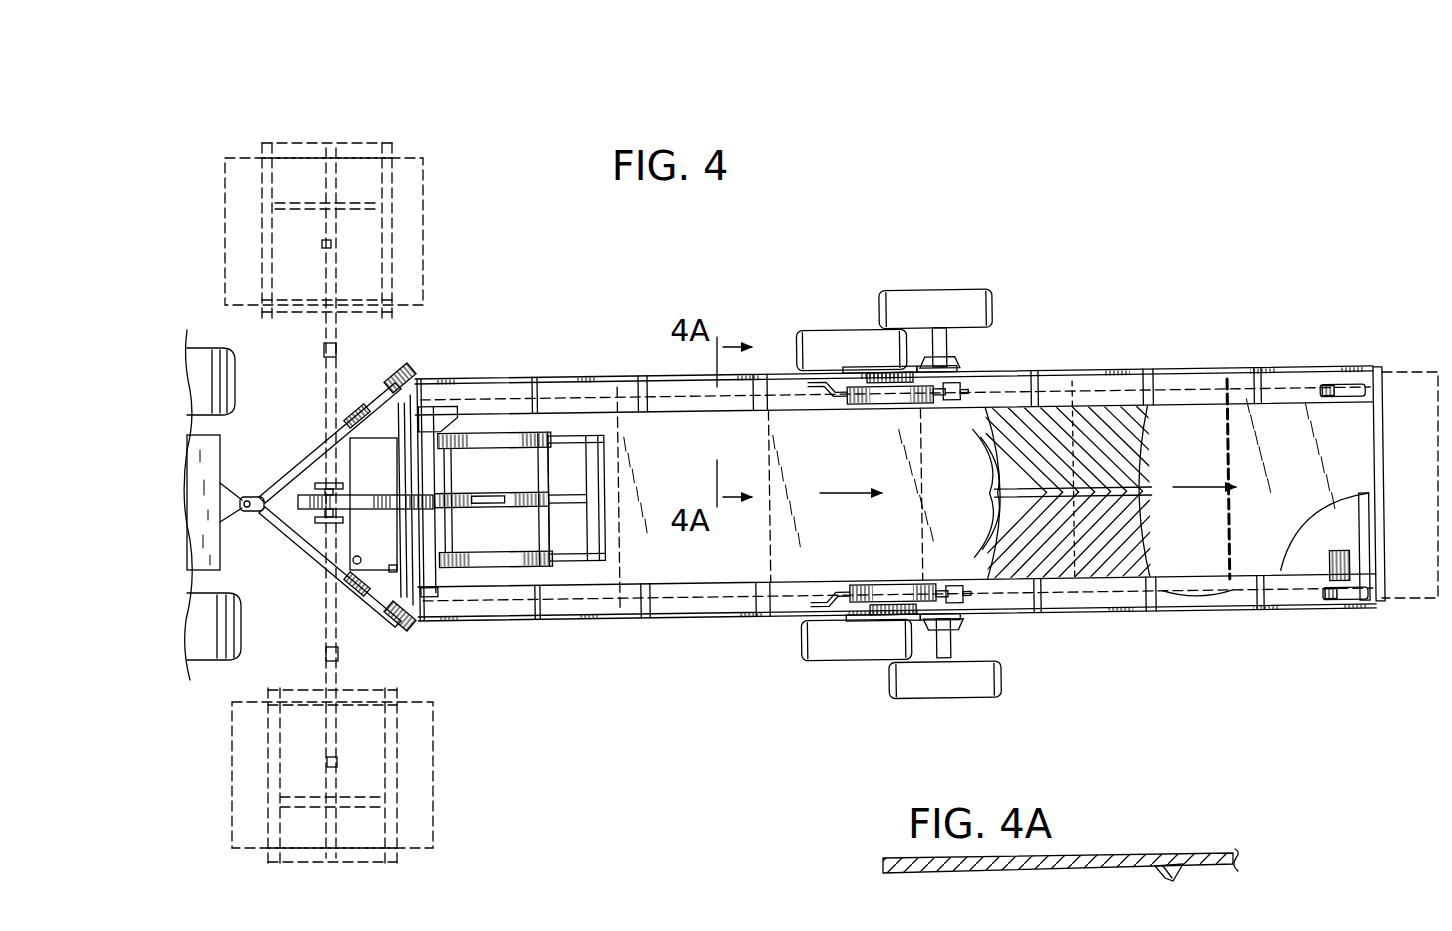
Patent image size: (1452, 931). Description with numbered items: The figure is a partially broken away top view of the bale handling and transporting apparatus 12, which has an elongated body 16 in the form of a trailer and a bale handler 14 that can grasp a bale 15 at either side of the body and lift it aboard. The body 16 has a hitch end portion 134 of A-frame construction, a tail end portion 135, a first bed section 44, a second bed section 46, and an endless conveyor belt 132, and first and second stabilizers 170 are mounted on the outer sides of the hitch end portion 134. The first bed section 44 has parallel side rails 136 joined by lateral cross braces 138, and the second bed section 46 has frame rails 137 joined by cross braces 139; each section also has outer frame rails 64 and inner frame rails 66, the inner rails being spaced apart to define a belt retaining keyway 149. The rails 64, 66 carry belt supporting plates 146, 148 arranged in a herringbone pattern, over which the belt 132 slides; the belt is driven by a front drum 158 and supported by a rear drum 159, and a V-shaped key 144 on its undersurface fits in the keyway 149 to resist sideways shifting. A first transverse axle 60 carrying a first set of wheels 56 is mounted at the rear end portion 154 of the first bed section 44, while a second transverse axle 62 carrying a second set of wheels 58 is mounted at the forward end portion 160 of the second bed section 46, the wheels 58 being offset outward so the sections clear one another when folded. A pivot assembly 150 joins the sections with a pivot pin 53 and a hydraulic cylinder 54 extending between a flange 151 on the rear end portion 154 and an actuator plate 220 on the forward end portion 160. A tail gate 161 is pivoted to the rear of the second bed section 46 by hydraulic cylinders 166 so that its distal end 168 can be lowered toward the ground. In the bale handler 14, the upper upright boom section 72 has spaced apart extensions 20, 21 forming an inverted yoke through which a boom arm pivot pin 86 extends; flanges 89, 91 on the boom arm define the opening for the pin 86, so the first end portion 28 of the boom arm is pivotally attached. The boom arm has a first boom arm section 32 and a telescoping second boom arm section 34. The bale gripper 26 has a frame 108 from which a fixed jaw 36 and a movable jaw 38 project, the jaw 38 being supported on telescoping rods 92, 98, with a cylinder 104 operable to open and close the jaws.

In FIG. 4, the bale handling and transporting apparatus 12 is at (627, 661).
In FIG. 4, the bale handler 14 is at (491, 420).
In FIG. 4, the bale 15 is at (426, 247).
In FIG. 4, the elongated body 16 is at (1078, 360).
In FIG. 4, the extension 20 is at (326, 600).
In FIG. 4, the extension 21 is at (302, 493).
In FIG. 4, the bale gripper 26 is at (350, 140).
In FIG. 4, the first end portion of boom arm 28 is at (296, 502).
In FIG. 4, the first boom arm section 32 is at (338, 380).
In FIG. 4, the second boom arm section 34 is at (338, 343).
In FIG. 4, the bale gripping jaw 36 is at (386, 322).
In FIG. 4, the bale gripping jaw 38 is at (372, 142).
In FIG. 4, the first bed section 44 is at (703, 624).
In FIG. 4, the second bed section 46 is at (1159, 623).
In FIG. 4, the pivot pin 53 is at (913, 372).
In FIG. 4, the hydraulic cylinder 54 is at (870, 407).
In FIG. 4, the first set of wheels 56 is at (812, 337).
In FIG. 4, the second set of wheels 58 is at (950, 291).
In FIG. 4, the first transverse axle 60 is at (853, 609).
In FIG. 4, the second transverse axle 62 is at (977, 322).
In FIG. 4, the outer longitudinally extending frame rail 64 is at (1047, 410).
In FIG. 4, the inner longitudinally extending frame rail 66 is at (995, 467).
In FIG. 4, the upper upright boom section 72 is at (317, 531).
In FIG. 4, the boom arm pivot pin 86 is at (326, 476).
In FIG. 4, the flange 89 is at (358, 511).
In FIG. 4, the flange 91 is at (364, 494).
In FIG. 4, the telescoping rod 92 is at (511, 572).
In FIG. 4, the telescoping rod 98 is at (513, 430).
In FIG. 4, the cylinder 104 is at (563, 494).
In FIG. 4, the frame 108 is at (315, 245).
In FIG. 4, the endless conveyor belt 132 is at (1163, 566).
In FIG. 4A, the endless conveyor belt 132 is at (1120, 853).
In FIG. 4, the hitch end portion 134 is at (269, 526).
In FIG. 4, the tail end portion 135 is at (1383, 366).
In FIG. 4, the side rail 136 is at (746, 376).
In FIG. 4, the frame rail 137 is at (1160, 372).
In FIG. 4, the lateral cross brace 138 is at (632, 606).
In FIG. 4, the lateral cross brace 139 is at (1237, 600).
In FIG. 4A, the key 144 is at (1182, 872).
In FIG. 4, the belt supporting plate 146 is at (1126, 450).
In FIG. 4, the belt supporting plate 148 is at (1131, 500).
In FIG. 4, the belt retaining keyway 149 is at (1151, 472).
In FIG. 4, the pivot assembly 150 is at (862, 676).
In FIG. 4, the flange 151 is at (818, 403).
In FIG. 4, the rear end portion of first bed section 154 is at (855, 360).
In FIG. 4, the front drum 158 is at (431, 424).
In FIG. 4, the rear belt supporting drum 159 is at (1368, 559).
In FIG. 4, the forward end portion of second bed section 160 is at (969, 363).
In FIG. 4, the tail gate 161 is at (1376, 486).
In FIG. 4, the tail gate actuator 166 is at (1357, 388).
In FIG. 4, the distal end of tail gate 168 is at (1437, 370).
In FIG. 4, the stabilizer 170 is at (420, 360).
In FIG. 4, the actuator plate 220 is at (962, 404).